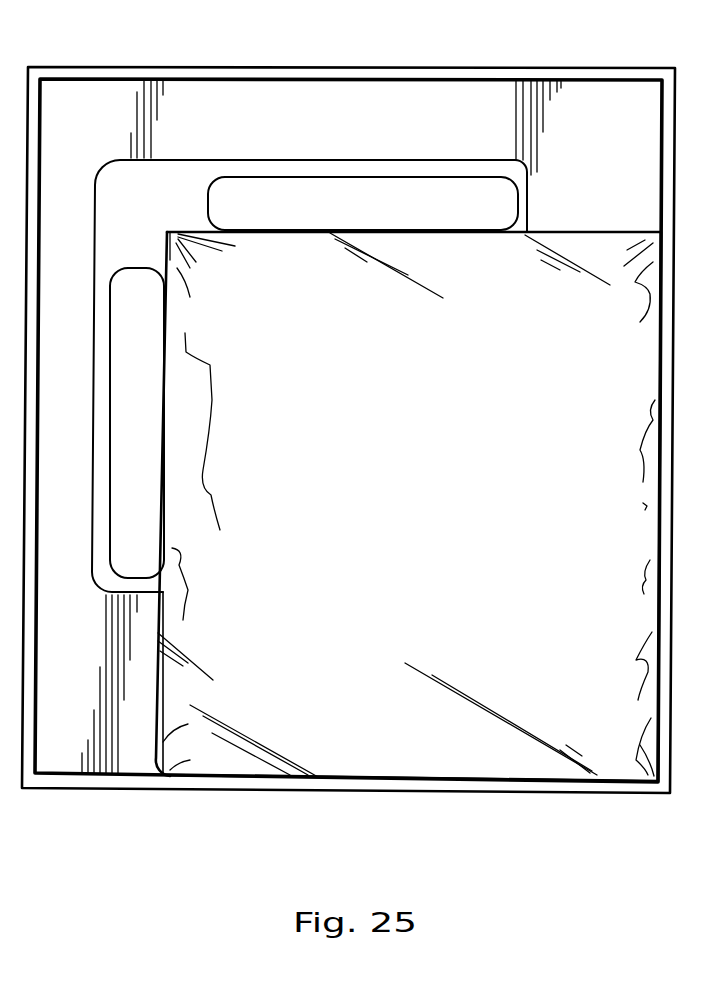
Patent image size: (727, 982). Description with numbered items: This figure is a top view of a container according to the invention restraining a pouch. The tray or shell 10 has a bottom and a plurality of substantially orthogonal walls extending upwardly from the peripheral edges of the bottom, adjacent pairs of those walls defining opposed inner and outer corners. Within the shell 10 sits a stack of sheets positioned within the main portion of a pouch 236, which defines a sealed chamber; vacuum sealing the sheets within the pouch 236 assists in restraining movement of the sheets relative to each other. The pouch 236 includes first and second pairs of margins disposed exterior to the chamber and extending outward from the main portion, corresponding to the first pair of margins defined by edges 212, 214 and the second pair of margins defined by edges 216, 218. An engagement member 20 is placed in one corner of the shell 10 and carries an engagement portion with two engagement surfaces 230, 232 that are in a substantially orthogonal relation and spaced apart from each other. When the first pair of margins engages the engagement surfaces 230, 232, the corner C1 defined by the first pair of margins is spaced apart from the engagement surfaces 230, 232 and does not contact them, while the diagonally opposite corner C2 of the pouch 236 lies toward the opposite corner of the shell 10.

The tray or shell 10 is at (568, 70).
The bracket 20 is at (318, 167).
The edge 212 is at (498, 234).
The edge 214 is at (163, 698).
The edge 216 is at (358, 774).
The edge 218 is at (658, 532).
The engagement surface 230 is at (410, 233).
The engagement surface 232 is at (165, 455).
The pouch 236 is at (443, 633).
The corner C1 is at (176, 240).
The second corner C2 is at (648, 770).